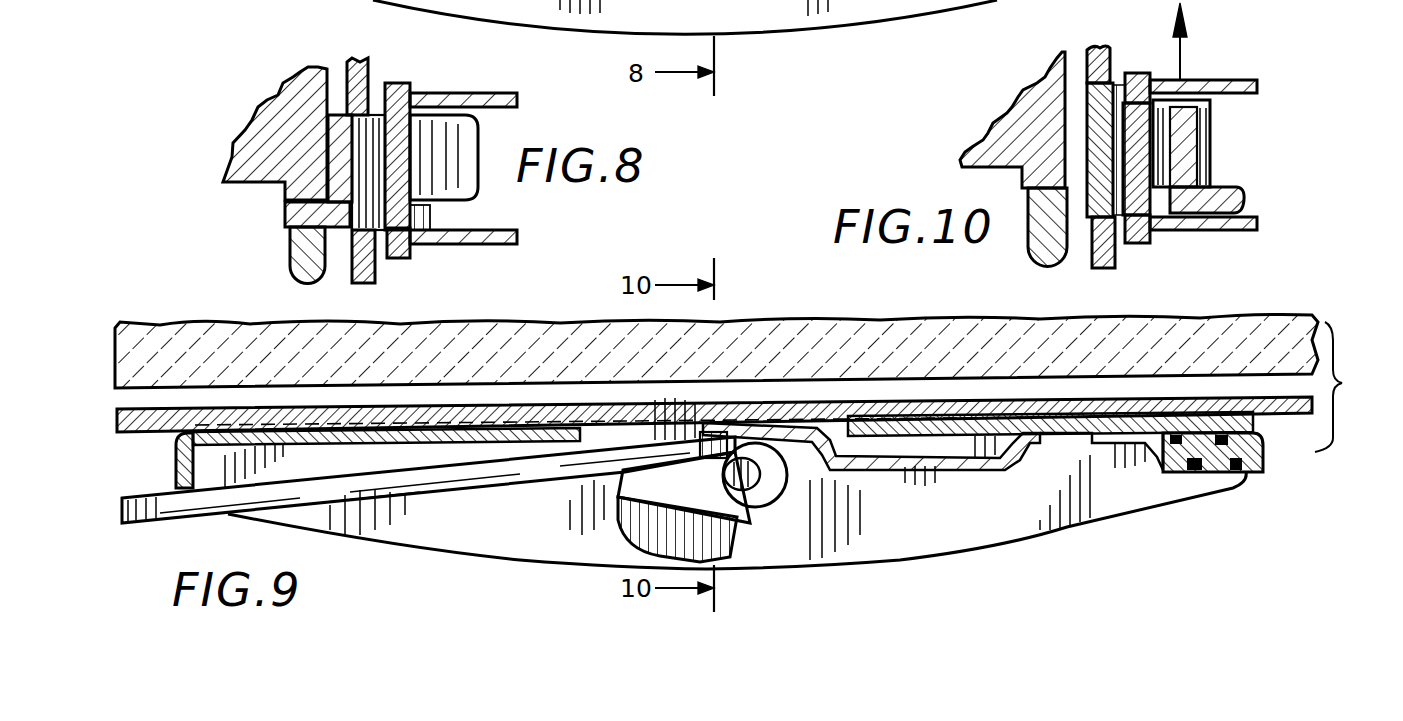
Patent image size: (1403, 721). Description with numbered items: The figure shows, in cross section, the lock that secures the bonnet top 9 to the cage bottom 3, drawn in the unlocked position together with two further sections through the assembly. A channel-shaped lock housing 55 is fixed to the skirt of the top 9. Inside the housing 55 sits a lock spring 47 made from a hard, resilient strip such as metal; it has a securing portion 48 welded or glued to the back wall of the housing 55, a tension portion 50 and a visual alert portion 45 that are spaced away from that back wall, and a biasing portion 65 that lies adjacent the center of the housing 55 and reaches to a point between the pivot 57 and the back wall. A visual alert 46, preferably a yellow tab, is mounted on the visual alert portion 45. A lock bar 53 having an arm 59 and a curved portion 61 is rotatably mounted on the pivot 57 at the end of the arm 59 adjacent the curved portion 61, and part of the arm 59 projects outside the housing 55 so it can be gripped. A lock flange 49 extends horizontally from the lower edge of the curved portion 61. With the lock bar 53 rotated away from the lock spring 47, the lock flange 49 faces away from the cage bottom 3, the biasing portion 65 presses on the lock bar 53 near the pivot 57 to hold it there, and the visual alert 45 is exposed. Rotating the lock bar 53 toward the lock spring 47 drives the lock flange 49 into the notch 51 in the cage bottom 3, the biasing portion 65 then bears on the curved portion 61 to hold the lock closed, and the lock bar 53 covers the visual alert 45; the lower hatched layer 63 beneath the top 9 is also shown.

In FIG. 8, the cage bottom 3 is at (256, 109).
In FIG. 10, the cage bottom 3 is at (1002, 110).
In FIG. 9, the cage bottom 3 is at (1277, 320).
In FIG. 8, the top 9 is at (370, 60).
In FIG. 10, the top 9 is at (1097, 45).
In FIG. 9, the top 9 is at (117, 420).
In FIG. 9, the visual alert portion 45 is at (1222, 472).
In FIG. 9, the visual alert 46 is at (165, 517).
In FIG. 9, the lock spring 47 is at (988, 463).
In FIG. 9, the securing portion 48 is at (1093, 443).
In FIG. 8, the lock flange 49 is at (283, 216).
In FIG. 10, the lock flange 49 is at (1238, 188).
In FIG. 9, the lock flange 49 is at (617, 523).
In FIG. 9, the tension portion 50 is at (962, 463).
In FIG. 10, the notch 51 is at (1022, 217).
In FIG. 8, the lock bar 53 is at (337, 100).
In FIG. 10, the lock bar 53 is at (1187, 97).
In FIG. 9, the lock bar 53 is at (462, 489).
In FIG. 8, the lock housing 55 is at (510, 93).
In FIG. 10, the lock housing 55 is at (1252, 80).
In FIG. 9, the lock housing 55 is at (176, 460).
In FIG. 9, the pivot 57 is at (740, 495).
In FIG. 9, the arm 59 is at (352, 490).
In FIG. 9, the curved portion 61 is at (778, 490).
In FIG. 9, the lower layer 63 is at (820, 407).
In FIG. 9, the biasing portion 65 is at (758, 432).